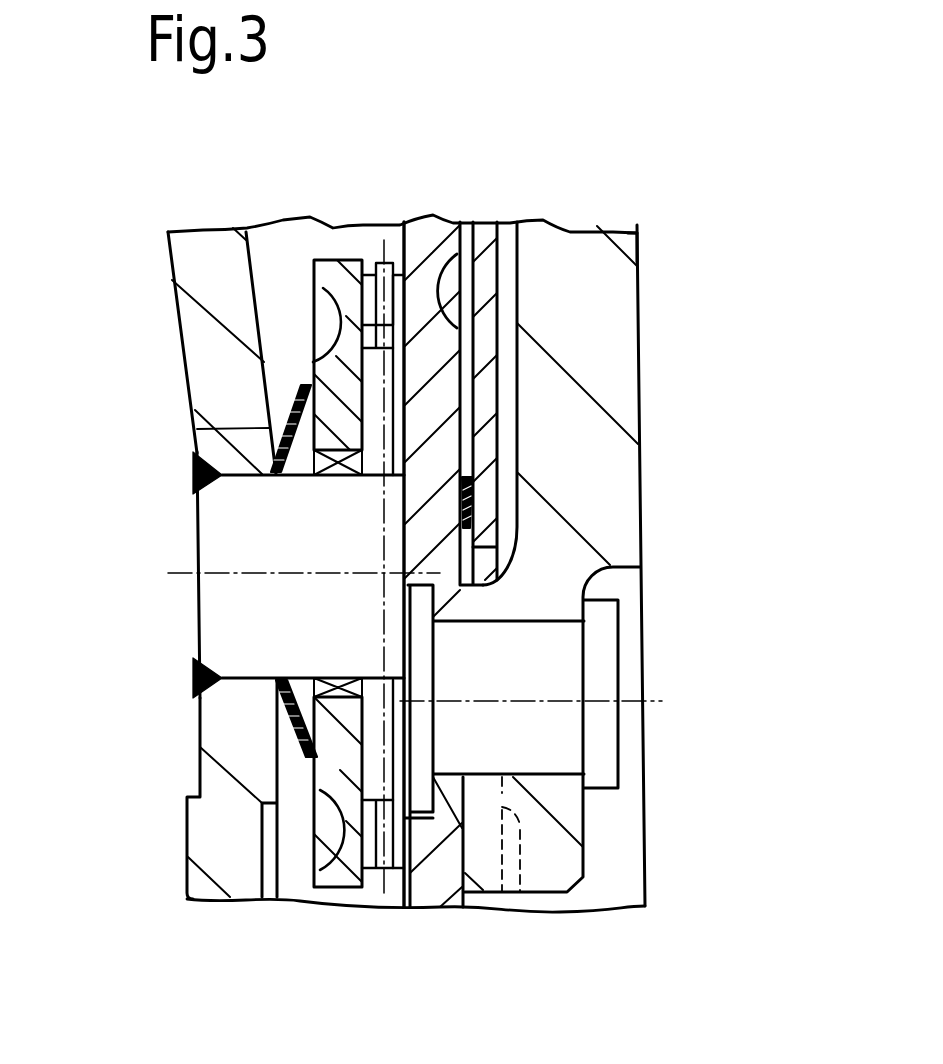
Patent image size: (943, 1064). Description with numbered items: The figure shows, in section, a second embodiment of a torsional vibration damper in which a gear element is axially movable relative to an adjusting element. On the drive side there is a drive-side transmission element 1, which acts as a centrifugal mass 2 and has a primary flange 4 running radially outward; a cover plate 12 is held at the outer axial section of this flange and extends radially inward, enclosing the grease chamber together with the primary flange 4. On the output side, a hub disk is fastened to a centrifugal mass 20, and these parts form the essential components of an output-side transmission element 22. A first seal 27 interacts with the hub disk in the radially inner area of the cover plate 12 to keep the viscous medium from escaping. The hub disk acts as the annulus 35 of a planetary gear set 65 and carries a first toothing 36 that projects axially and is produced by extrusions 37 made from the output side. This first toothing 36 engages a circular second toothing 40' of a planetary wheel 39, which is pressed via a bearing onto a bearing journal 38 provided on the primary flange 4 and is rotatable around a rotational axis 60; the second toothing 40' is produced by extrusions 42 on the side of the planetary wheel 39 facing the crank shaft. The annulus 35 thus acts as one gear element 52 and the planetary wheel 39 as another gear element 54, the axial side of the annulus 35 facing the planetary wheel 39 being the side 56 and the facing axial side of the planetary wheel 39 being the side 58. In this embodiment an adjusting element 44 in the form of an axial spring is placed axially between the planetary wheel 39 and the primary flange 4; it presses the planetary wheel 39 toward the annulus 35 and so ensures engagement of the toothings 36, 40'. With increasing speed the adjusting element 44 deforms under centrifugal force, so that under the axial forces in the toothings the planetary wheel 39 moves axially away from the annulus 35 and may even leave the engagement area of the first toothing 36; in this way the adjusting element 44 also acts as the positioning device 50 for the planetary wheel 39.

The drive-side transmission element 1 is at (171, 257).
The centrifugal mass 2 is at (213, 243).
The primary flange 4 is at (223, 735).
The cover plate 12 is at (480, 237).
The centrifugal mass 20 is at (582, 242).
The output-side transmission element 22 is at (641, 246).
The first seal 27 is at (472, 493).
The annulus 35 is at (437, 367).
The first toothing 36 is at (450, 296).
The extrusions 37 is at (432, 318).
The bearing journal 38 is at (223, 507).
The planetary wheel 39 is at (197, 429).
The second toothing 40' is at (219, 565).
The extrusions 42 is at (323, 289).
The adjusting element 44 is at (312, 420).
The positioning device 50 is at (293, 733).
The gear element 52 is at (437, 437).
The gear element 54 is at (355, 445).
The axial side of the annulus 56 is at (363, 475).
The axial side of the planetary wheel 58 is at (365, 396).
The rotational axis 60 is at (277, 573).
The planetary gear set 65 is at (378, 239).